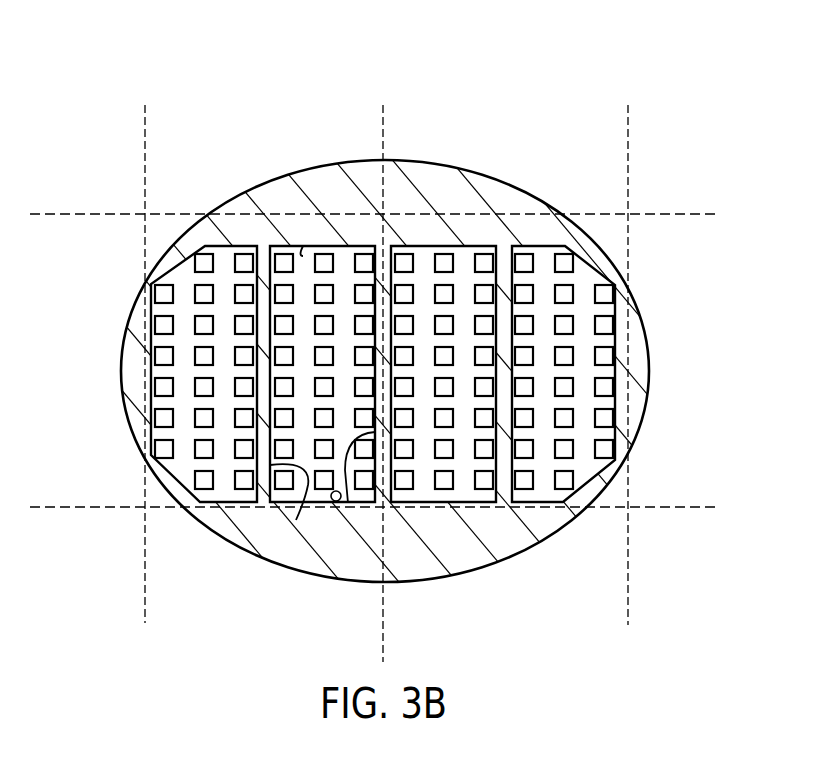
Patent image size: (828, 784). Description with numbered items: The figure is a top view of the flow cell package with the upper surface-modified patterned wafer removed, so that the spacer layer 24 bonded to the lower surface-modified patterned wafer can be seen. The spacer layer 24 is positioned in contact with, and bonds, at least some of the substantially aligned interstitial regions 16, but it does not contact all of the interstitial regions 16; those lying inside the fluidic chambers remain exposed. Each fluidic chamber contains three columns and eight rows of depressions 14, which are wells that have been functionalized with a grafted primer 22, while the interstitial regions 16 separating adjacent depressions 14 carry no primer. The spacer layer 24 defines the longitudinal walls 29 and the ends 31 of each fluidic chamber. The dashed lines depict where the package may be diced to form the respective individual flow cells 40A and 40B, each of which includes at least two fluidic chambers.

The flow cell 40A is at (278, 131).
The flow cell 40B is at (522, 131).
The ends 31 is at (303, 246).
The interstitial regions 16 is at (465, 245).
The primer 22 is at (196, 266).
The spacer layer 24 is at (637, 346).
The depressions 14 is at (150, 454).
The longitudinal walls 29 is at (296, 520).